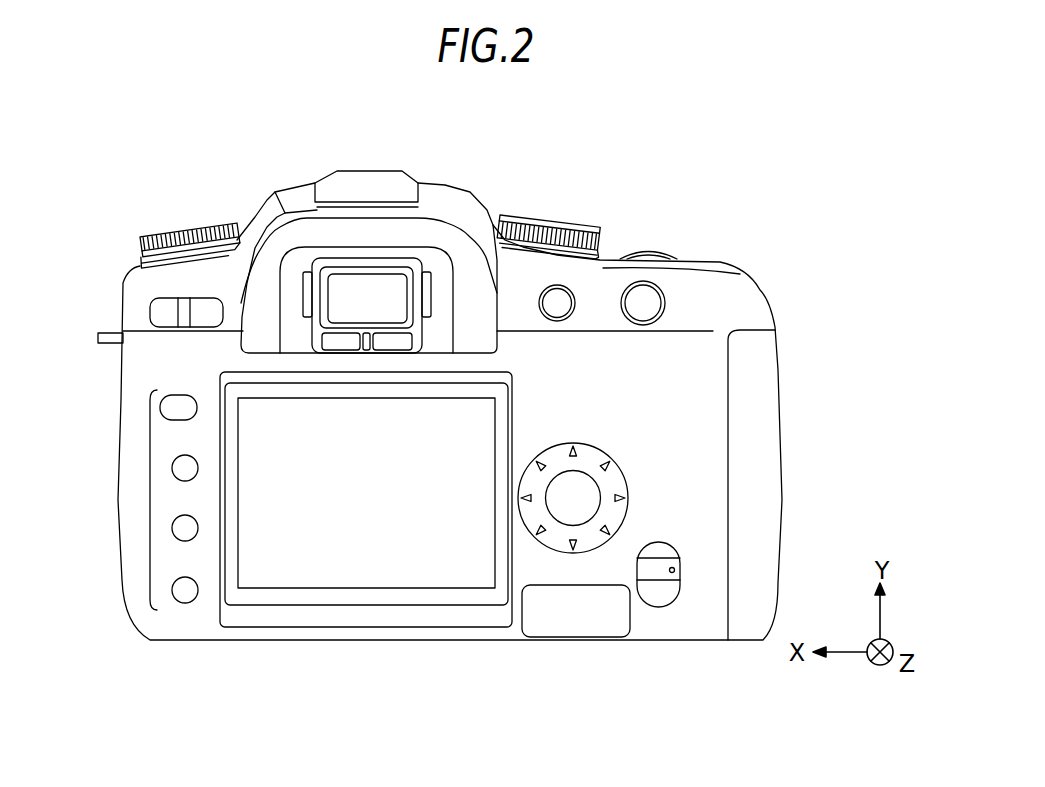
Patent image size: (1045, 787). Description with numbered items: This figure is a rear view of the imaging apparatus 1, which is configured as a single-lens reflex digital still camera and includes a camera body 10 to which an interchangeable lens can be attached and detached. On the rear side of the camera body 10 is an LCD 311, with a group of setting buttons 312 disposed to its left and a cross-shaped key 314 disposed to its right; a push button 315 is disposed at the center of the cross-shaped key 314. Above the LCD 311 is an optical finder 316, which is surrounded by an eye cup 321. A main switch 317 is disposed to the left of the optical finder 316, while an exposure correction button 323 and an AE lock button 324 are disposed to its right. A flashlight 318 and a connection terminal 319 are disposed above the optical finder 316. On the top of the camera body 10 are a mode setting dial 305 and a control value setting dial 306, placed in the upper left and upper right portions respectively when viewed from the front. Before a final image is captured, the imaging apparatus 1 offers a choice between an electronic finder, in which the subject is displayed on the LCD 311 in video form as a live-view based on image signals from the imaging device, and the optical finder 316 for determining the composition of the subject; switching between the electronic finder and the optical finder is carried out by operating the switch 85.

The imaging apparatus 1 is at (68, 114).
The camera body 10 is at (136, 219).
The control value setting dial 306 is at (177, 235).
The mode setting dial 305 is at (542, 222).
The eye cup 321 is at (285, 228).
The flashlight 318 is at (302, 187).
The connection terminal 319 is at (357, 168).
The optical finder 316 is at (393, 285).
The exposure correction button 323 is at (565, 302).
The AE lock button 324 is at (647, 300).
The main switch 317 is at (150, 310).
The group of setting buttons 312 is at (150, 498).
The LCD 311 is at (353, 577).
The cross-shaped key 314 is at (585, 453).
The push button 315 is at (588, 490).
The switch 85 is at (657, 598).